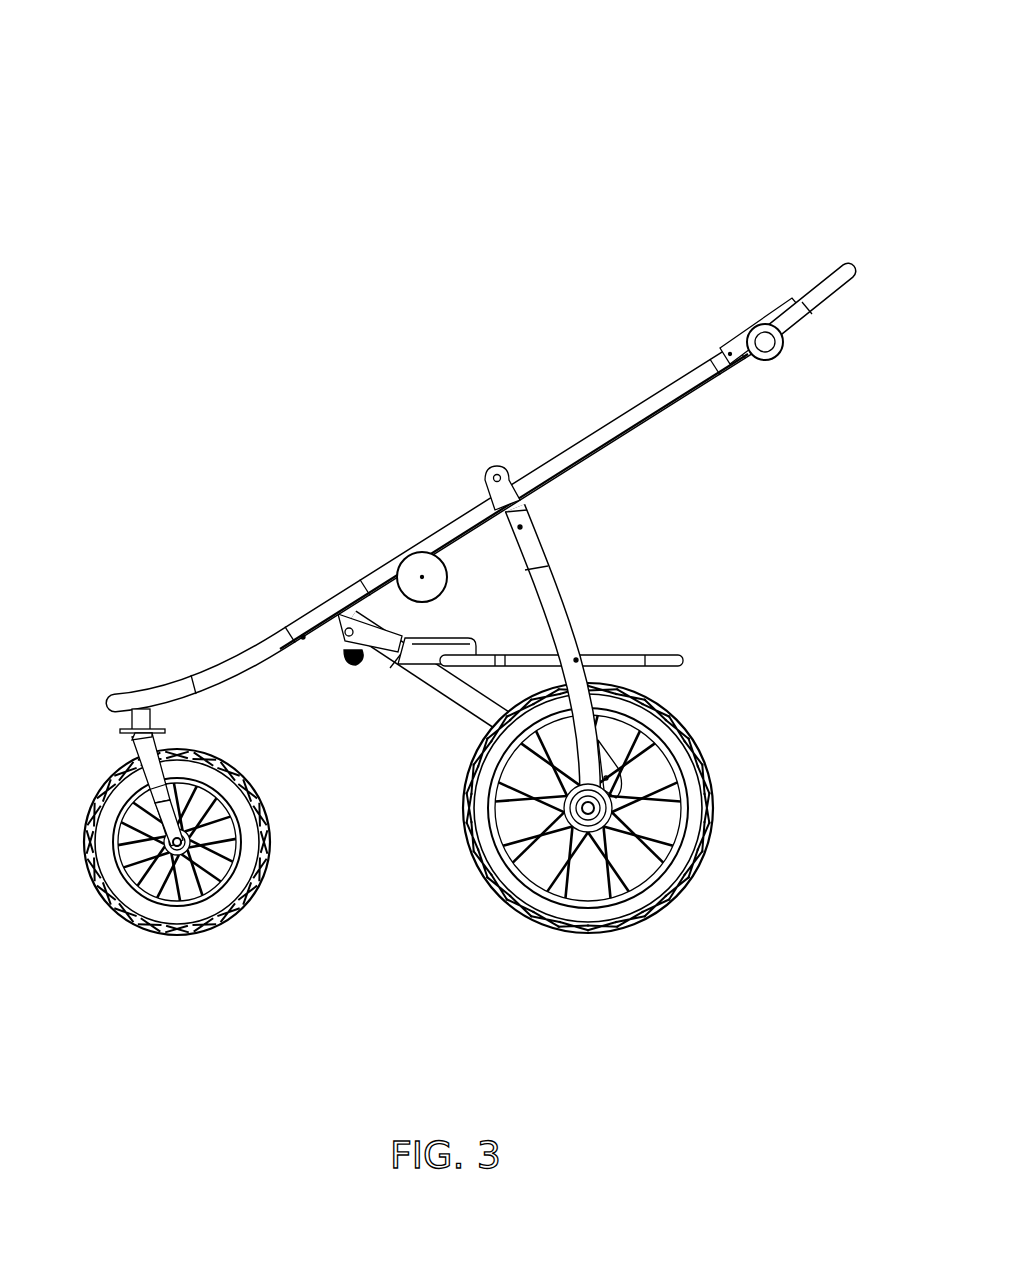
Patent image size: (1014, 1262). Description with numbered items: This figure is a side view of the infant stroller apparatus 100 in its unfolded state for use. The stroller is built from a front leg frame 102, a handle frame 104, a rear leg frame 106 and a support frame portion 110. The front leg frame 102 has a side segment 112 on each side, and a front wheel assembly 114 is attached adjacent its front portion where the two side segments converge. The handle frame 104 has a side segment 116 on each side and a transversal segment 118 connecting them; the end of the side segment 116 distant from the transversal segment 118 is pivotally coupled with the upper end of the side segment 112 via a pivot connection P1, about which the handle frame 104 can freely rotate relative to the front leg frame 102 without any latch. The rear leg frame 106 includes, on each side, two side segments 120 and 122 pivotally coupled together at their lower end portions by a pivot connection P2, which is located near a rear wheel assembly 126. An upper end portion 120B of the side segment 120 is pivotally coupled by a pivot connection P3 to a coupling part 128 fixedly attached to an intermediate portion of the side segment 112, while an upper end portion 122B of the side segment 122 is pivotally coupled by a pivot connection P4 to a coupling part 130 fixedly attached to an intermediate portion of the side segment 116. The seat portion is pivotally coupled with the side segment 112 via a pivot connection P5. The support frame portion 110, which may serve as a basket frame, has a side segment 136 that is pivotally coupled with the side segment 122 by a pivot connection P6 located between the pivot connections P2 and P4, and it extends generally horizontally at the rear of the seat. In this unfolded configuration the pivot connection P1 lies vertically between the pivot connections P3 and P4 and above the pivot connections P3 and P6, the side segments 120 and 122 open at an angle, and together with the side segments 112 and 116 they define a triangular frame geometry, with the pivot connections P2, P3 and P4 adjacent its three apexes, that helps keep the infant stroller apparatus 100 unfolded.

The infant stroller apparatus 100 is at (117, 42).
The front leg frame 102 is at (152, 663).
The handle frame 104 is at (512, 447).
The rear leg frame 106 is at (469, 714).
The support frame portion 110 is at (591, 631).
The side segment 112 is at (211, 631).
The front wheel assembly 114 is at (100, 945).
The side segment 116 is at (648, 382).
The transversal segment 118 is at (862, 268).
The side segment 120 is at (469, 695).
The upper end portion 120B is at (372, 622).
The side segment 122 is at (566, 654).
The upper end portion 122B is at (512, 548).
The rear wheel assembly 126 is at (695, 930).
The coupling part 128 is at (343, 650).
The coupling part 130 is at (524, 510).
The side segment 136 is at (517, 655).
The pivot connection P1 is at (428, 576).
The pivot connection P2 is at (636, 720).
The pivot connection P3 is at (349, 630).
The pivot connection P4 is at (522, 525).
The pivot connection P5 is at (303, 637).
The pivot connection P6 is at (580, 658).